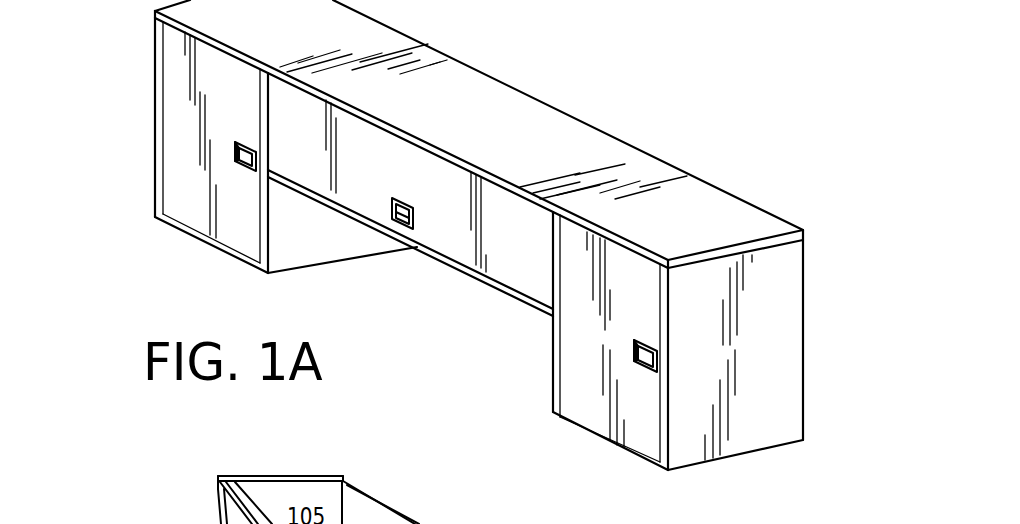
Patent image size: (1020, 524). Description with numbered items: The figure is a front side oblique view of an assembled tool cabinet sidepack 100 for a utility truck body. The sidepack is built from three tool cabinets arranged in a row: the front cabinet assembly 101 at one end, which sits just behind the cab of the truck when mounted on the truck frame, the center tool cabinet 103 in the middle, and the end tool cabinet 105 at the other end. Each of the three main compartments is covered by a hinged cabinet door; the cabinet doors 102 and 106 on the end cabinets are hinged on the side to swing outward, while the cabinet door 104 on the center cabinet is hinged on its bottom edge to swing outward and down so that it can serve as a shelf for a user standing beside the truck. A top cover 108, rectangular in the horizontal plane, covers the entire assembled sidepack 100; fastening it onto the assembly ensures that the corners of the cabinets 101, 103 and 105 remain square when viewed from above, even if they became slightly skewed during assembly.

The cabinet sidepack 100 is at (80, 235).
The front cabinet assembly 101 is at (608, 443).
The cabinet door 102 is at (570, 388).
The center tool cabinet 103 is at (493, 288).
The cabinet door 104 is at (441, 229).
The end tool cabinet 105 is at (180, 230).
The cabinet door 106 is at (182, 147).
The top cover 108 is at (608, 155).